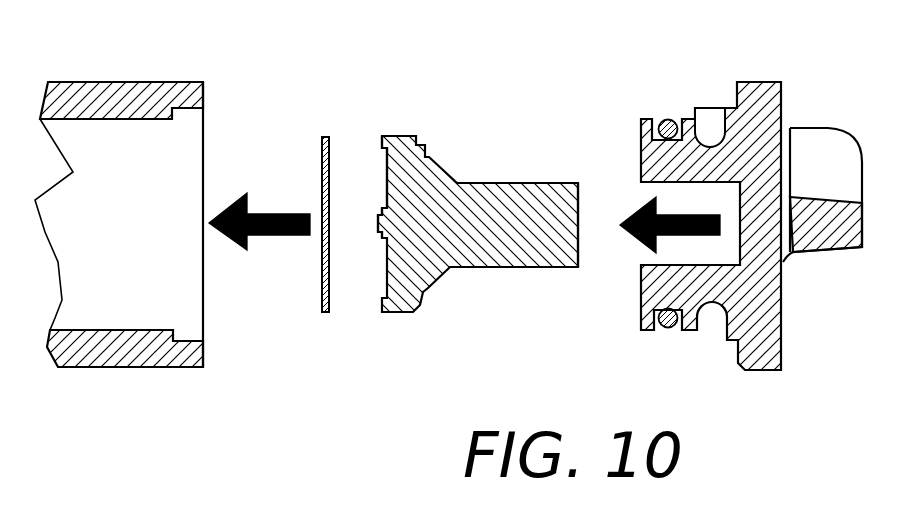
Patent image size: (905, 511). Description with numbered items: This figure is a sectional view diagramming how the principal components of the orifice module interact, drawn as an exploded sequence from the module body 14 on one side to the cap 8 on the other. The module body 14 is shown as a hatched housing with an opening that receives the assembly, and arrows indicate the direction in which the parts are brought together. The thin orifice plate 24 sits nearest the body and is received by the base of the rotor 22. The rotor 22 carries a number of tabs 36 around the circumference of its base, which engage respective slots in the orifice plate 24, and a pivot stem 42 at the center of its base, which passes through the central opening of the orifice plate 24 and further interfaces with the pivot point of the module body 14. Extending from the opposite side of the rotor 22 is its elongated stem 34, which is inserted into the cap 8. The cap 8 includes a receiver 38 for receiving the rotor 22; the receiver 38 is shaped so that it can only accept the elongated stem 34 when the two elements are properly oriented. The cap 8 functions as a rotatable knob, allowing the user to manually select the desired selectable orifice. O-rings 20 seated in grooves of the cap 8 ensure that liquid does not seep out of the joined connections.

The cap 8 is at (720, 197).
The module body 14 is at (160, 82).
The o-ring 20 is at (671, 119).
The rotor 22 is at (500, 182).
The orifice plate 24 is at (319, 137).
The elongated stem 34 is at (578, 249).
The tabs 36 is at (382, 210).
The receiver 38 is at (682, 185).
The pivot stem 42 is at (378, 224).